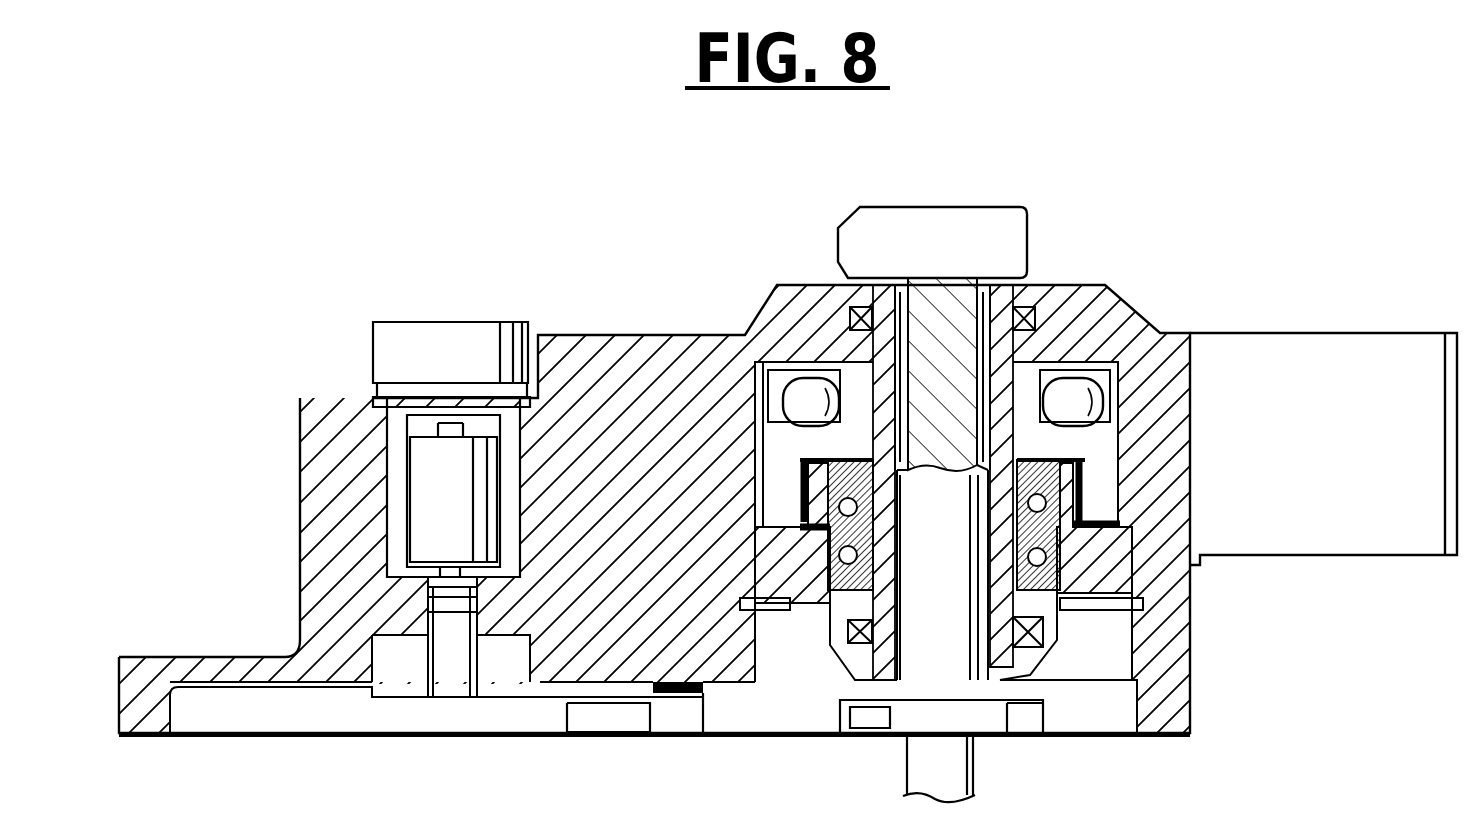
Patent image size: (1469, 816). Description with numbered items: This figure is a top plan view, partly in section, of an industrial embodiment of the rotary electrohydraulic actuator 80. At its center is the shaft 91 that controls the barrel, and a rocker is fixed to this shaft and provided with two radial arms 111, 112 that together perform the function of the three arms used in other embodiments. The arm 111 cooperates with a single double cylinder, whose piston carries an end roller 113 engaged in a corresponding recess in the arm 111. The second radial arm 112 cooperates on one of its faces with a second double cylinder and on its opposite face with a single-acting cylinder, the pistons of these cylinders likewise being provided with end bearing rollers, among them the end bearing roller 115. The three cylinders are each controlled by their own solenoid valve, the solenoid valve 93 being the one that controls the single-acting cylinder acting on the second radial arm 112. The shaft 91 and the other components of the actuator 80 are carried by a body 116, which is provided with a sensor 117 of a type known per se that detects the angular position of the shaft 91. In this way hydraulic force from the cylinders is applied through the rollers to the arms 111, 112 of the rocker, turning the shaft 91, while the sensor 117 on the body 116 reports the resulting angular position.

The rotary electrohydraulic actuator 80 is at (485, 240).
The shaft 91 is at (918, 643).
The solenoid valve 93 is at (1336, 458).
The radial arm 111 is at (765, 412).
The second radial arm 112 is at (1047, 370).
The end roller 113 is at (795, 400).
The end bearing roller 115 is at (1077, 385).
The body 116 is at (595, 633).
The sensor 117 is at (433, 472).